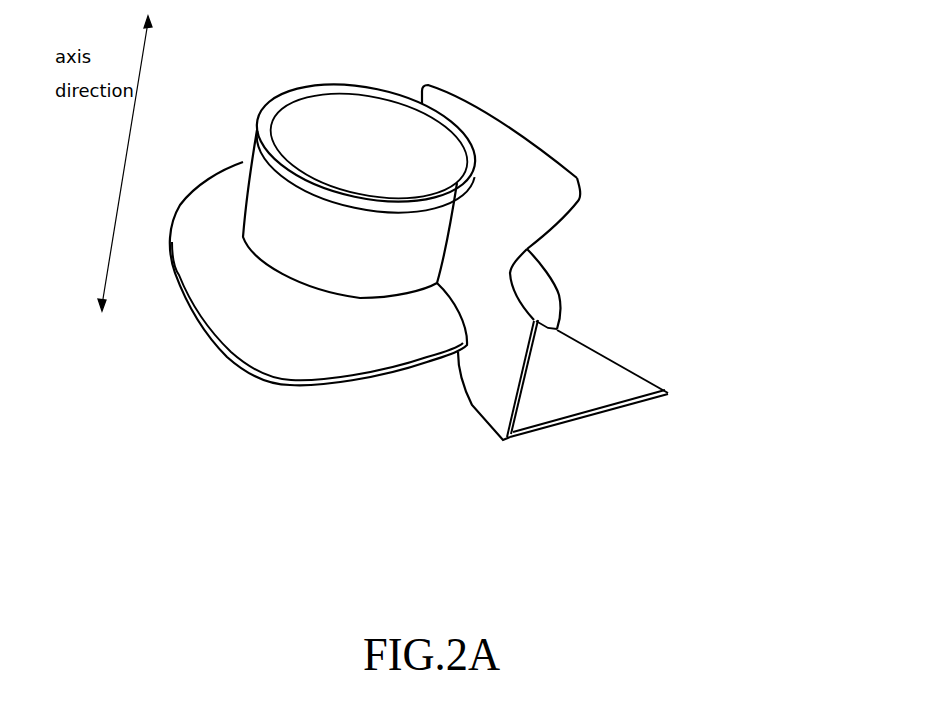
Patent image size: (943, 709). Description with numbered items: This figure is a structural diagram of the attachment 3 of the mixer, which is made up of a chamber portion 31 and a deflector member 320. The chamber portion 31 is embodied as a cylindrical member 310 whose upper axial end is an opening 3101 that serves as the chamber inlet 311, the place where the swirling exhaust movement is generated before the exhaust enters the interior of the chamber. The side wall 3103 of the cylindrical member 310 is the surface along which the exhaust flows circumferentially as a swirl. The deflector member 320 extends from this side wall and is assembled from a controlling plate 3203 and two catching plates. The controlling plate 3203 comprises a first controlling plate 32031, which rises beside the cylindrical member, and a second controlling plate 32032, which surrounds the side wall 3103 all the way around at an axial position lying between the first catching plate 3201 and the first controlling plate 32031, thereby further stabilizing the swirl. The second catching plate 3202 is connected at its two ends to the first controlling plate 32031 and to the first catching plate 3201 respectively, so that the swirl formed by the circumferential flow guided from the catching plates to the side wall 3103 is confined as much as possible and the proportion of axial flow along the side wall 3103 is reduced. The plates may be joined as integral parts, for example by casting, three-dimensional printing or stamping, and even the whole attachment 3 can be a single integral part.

The attachment 3 is at (554, 32).
The cylindrical member 310 is at (343, 272).
The chamber portion 31 is at (323, 243).
The opening at axial end of cylindrical member 3101 is at (390, 138).
The chamber inlet 311 is at (330, 103).
The side wall of cylindrical member 3103 is at (288, 193).
The deflector member 320 is at (605, 433).
The second controlling plate 32032 is at (230, 283).
The controlling plate 3203 is at (682, 105).
The first controlling plate 32031 is at (537, 172).
The second catching plate 3202 is at (482, 388).
The first catching plate 3201 is at (605, 377).